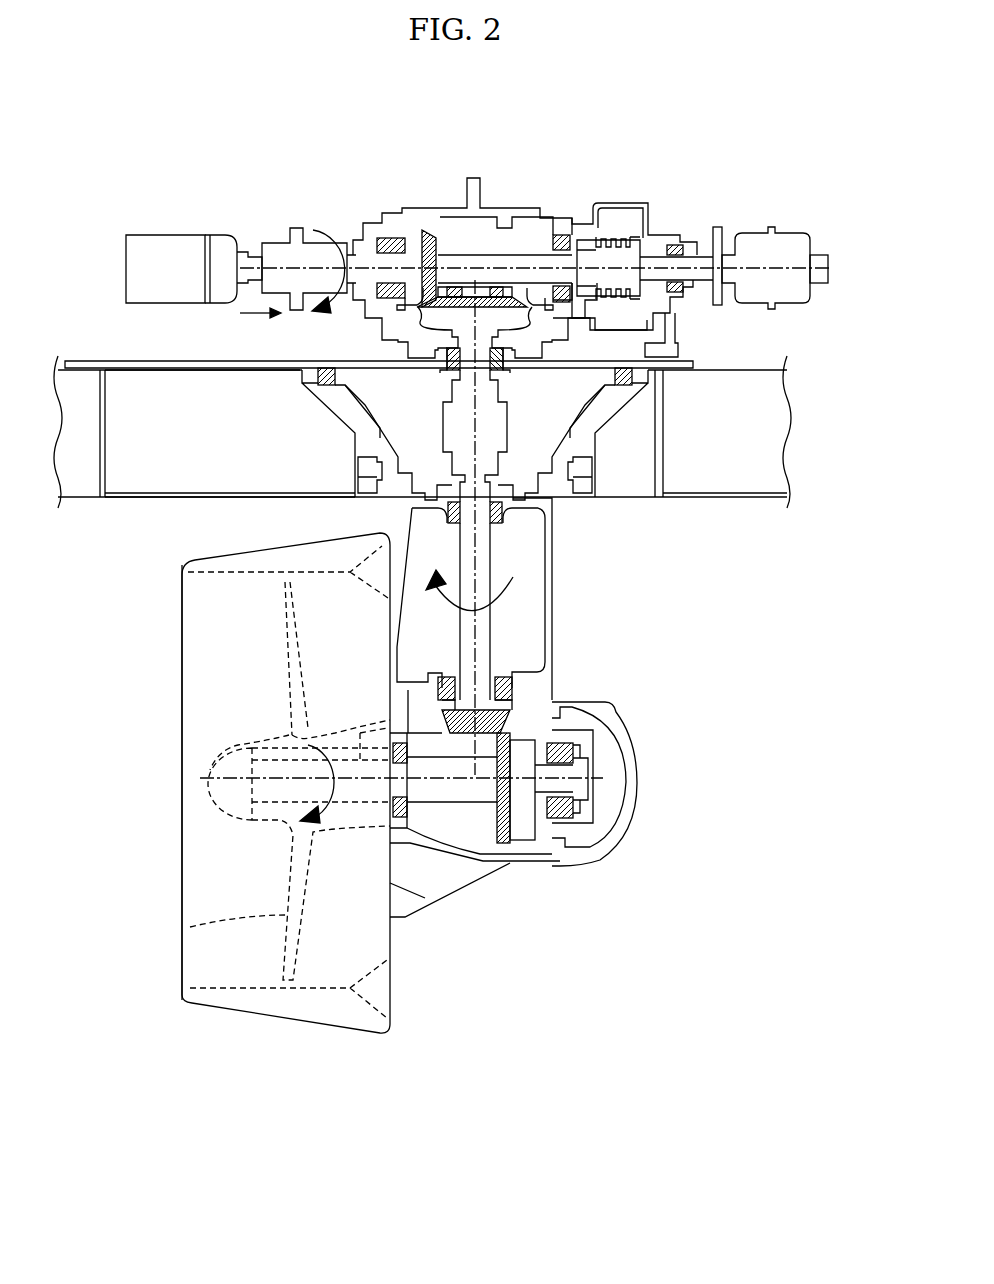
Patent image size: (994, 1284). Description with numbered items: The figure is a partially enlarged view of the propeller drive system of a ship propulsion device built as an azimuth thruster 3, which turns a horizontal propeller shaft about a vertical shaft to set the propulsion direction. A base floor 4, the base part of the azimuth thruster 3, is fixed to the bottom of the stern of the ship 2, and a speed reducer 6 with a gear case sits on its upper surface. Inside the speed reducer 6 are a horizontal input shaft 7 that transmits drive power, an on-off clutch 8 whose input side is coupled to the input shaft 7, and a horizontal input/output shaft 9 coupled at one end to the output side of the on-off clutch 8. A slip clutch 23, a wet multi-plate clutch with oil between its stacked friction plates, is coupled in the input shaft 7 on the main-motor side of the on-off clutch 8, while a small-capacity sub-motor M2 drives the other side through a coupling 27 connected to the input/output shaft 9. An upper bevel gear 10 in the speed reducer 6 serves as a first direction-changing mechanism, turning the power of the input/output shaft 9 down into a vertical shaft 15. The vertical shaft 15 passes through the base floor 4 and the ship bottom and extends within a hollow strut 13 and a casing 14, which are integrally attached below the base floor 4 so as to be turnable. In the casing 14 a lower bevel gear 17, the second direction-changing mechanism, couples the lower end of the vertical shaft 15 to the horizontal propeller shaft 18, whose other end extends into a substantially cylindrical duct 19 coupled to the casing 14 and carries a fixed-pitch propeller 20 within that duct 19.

The sub-motor M2 is at (167, 262).
The coupling 27 is at (272, 257).
The speed reducer 6 is at (512, 210).
The input/output shaft 9 is at (490, 257).
The upper bevel gear 10 is at (432, 253).
The on-off clutch 8 is at (617, 238).
The input shaft 7 is at (703, 263).
The slip clutch 23 is at (792, 247).
The ship 2 is at (732, 497).
The base floor 4 is at (156, 498).
The vertical shaft 15 is at (482, 560).
The strut 13 is at (553, 598).
The lower bevel gear 17 is at (508, 720).
The casing 14 is at (637, 777).
The propeller shaft 18 is at (458, 795).
The duct 19 is at (300, 1020).
The propeller 20 is at (190, 927).
The azimuth thruster 3 is at (172, 795).